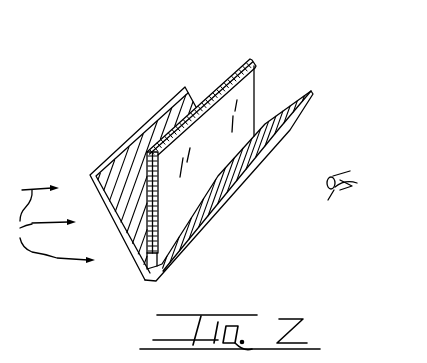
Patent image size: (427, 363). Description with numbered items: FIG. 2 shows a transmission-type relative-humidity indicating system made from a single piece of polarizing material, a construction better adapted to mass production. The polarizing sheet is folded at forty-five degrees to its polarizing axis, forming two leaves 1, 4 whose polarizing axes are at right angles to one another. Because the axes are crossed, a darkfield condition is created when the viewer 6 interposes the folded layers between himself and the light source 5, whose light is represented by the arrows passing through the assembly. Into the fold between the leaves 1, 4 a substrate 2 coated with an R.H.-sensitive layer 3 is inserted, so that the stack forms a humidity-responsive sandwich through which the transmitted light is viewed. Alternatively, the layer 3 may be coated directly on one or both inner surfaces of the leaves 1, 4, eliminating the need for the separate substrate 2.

The leaf 1 is at (185, 88).
The substrate 2 is at (251, 61).
The R.H.-sensitive layer 3 is at (257, 66).
The leaf 4 is at (311, 91).
The light source 5 is at (50, 224).
The viewer 6 is at (350, 171).